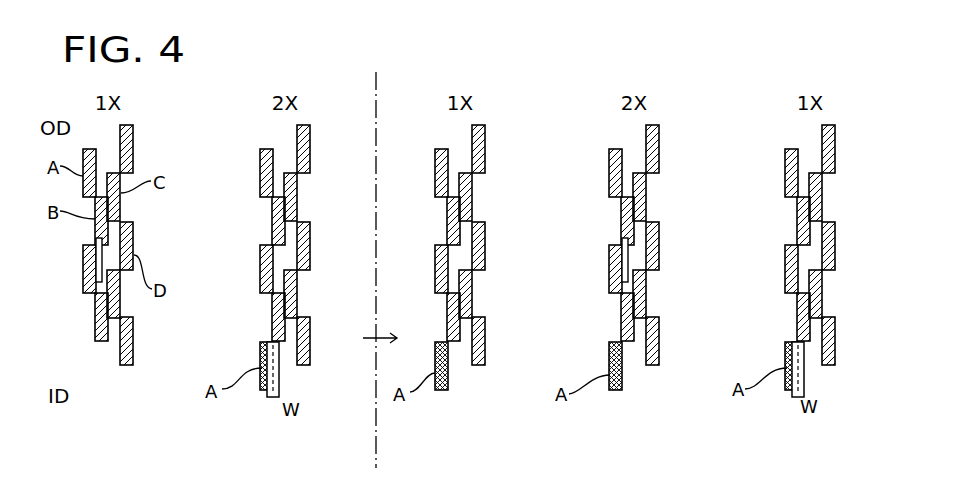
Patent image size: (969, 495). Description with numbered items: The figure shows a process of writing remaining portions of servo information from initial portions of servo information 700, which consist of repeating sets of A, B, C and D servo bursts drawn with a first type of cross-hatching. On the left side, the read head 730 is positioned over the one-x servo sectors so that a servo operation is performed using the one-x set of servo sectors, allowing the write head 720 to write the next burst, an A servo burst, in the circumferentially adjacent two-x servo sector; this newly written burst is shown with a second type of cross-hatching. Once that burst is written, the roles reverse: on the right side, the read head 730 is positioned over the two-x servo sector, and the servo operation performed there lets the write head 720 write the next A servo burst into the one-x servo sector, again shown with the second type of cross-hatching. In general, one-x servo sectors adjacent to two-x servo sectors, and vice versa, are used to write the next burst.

The initial portions of servo information 700 is at (158, 123).
The write head 720 is at (268, 397).
The read head 730 is at (97, 262).